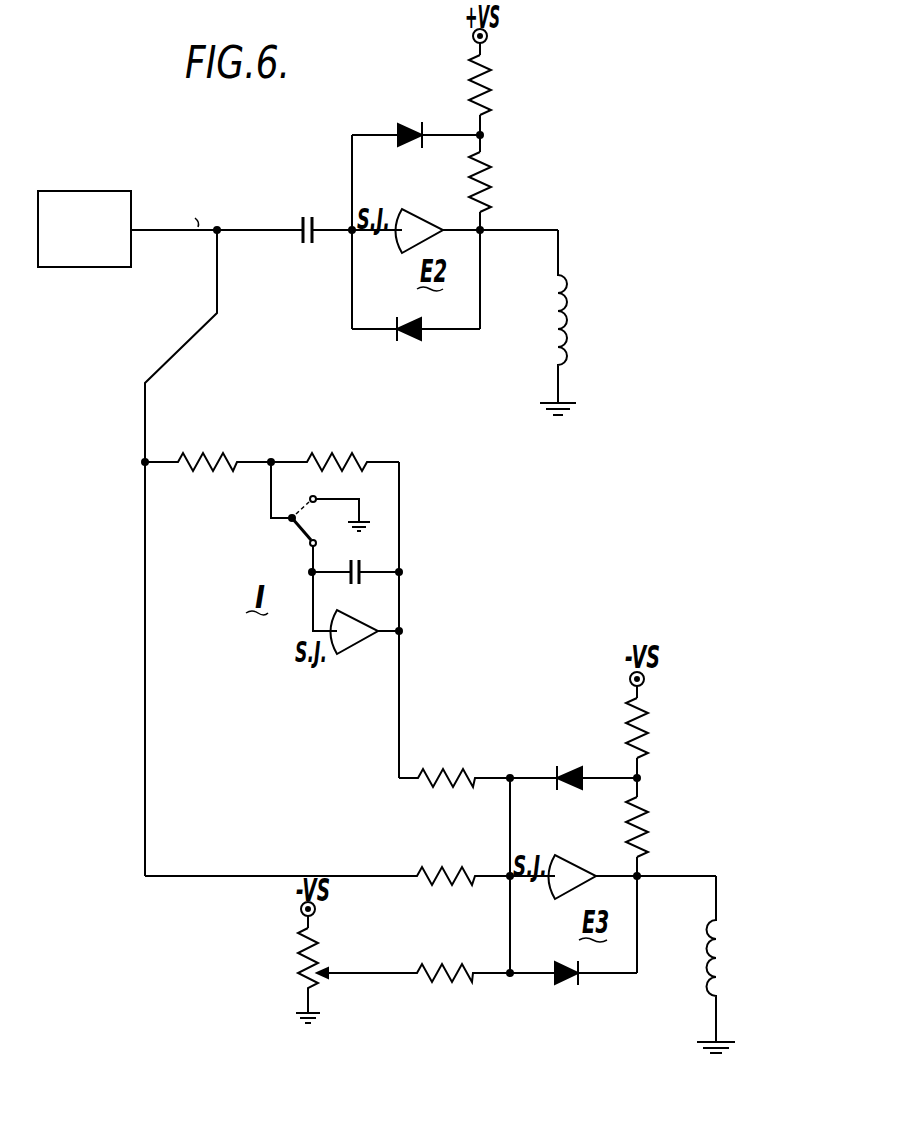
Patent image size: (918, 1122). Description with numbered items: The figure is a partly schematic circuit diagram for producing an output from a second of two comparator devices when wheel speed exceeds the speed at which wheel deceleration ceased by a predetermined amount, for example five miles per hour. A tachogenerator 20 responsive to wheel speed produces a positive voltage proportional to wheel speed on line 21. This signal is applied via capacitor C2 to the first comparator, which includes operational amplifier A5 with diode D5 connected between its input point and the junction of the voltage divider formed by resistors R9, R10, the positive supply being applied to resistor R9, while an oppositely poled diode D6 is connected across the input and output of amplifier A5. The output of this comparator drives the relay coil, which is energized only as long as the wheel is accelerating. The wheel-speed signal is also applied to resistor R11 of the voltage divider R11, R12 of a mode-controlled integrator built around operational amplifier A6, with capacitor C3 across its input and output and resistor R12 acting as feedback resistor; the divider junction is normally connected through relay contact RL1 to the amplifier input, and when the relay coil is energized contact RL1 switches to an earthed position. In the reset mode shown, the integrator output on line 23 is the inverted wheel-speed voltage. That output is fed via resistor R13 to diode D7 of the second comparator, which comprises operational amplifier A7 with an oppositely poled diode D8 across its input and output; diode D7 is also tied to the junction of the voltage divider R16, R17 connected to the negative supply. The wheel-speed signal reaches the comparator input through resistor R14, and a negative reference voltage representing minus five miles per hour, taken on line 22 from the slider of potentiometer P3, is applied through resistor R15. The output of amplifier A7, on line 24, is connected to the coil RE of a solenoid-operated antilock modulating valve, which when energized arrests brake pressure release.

The tachogenerator 20 is at (90, 190).
The line 21 is at (164, 236).
The line 22 is at (381, 974).
The line 23 is at (399, 678).
The output line to relay RE 24 is at (676, 877).
The capacitor C2 is at (308, 218).
The capacitor C3 is at (357, 565).
The diode D5 is at (411, 124).
The diode D6 is at (407, 343).
The diode D7 is at (566, 765).
The diode D8 is at (567, 985).
The operational amplifier A5 is at (411, 228).
The operational amplifier A6 is at (357, 631).
The operational amplifier A7 is at (572, 872).
The resistor R9 is at (488, 87).
The resistor R10 is at (488, 185).
The resistor R11 is at (210, 454).
The resistor R12 is at (337, 454).
The resistor R13 is at (446, 770).
The resistor R14 is at (443, 867).
The resistor R15 is at (446, 964).
The resistor R16 is at (646, 735).
The resistor R17 is at (646, 825).
The potentiometer P3 is at (300, 962).
The relay contact RL1 is at (305, 542).
The coil RE is at (706, 973).